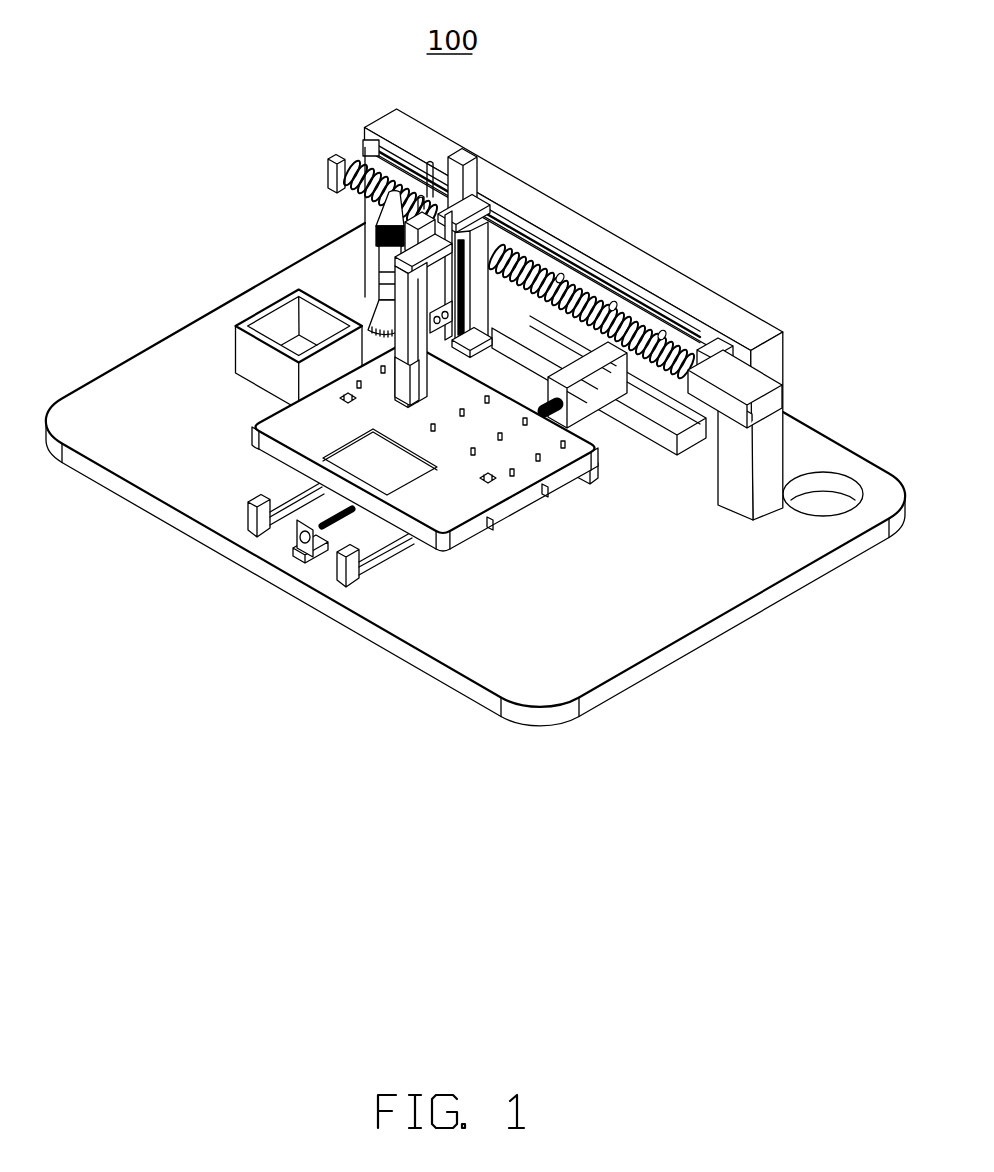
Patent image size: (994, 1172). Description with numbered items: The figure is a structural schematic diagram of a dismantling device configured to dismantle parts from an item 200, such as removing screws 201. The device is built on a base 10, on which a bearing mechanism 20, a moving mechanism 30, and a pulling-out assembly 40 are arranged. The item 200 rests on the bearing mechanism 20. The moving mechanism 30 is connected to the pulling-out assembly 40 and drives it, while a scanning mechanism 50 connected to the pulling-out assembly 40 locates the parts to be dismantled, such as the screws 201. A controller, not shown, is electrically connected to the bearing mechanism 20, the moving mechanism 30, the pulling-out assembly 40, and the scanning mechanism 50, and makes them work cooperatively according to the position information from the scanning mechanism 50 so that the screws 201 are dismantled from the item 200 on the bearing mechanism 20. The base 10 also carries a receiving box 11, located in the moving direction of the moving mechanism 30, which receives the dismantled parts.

The base 10 is at (422, 624).
The receiving box 11 is at (287, 320).
The bearing mechanism 20 is at (277, 465).
The item 200 is at (292, 421).
The screws 201 is at (437, 428).
The moving mechanism 30 is at (511, 164).
The pulling-out assembly 40 is at (466, 283).
The scanning mechanism 50 is at (393, 215).